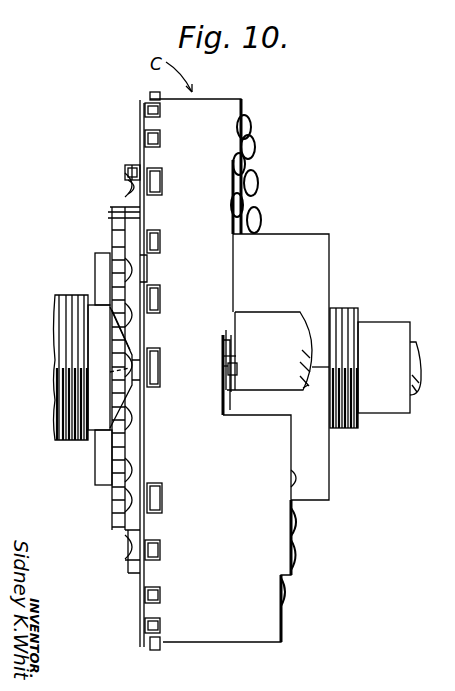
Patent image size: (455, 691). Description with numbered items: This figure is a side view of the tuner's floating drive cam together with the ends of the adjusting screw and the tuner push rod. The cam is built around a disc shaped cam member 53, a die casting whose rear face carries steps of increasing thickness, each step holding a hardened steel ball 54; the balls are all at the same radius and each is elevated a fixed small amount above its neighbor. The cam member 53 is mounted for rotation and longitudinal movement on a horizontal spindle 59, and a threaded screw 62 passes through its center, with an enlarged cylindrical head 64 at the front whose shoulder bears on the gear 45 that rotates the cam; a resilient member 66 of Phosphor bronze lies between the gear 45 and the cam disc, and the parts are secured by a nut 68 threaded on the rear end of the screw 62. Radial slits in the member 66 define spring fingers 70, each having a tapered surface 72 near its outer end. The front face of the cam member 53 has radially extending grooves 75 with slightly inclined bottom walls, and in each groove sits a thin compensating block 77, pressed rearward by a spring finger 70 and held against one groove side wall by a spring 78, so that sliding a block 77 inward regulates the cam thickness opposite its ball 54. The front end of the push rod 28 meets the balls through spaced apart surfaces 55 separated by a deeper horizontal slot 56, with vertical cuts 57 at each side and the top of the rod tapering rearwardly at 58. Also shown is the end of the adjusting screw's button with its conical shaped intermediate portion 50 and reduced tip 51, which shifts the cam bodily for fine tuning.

The push rod 28 is at (290, 321).
The gear 45 is at (112, 229).
The conical shaped intermediate portion 50 is at (118, 401).
The tip 51 is at (140, 372).
The cam member 53 is at (233, 90).
The hardened steel ball 54 is at (254, 158).
The spaced apart surfaces 55 is at (238, 384).
The horizontal slot 56 is at (226, 366).
The vertical cuts 57 is at (238, 360).
The tapered top 58 is at (236, 334).
The horizontal spindle 59 is at (404, 365).
The threaded screw 62 is at (346, 312).
The enlarged cylindrical head 64 is at (97, 467).
The resilient member 66 is at (118, 199).
The nut 68 is at (318, 250).
The spring fingers 70 is at (136, 170).
The tapered surface 72 is at (126, 187).
The radially extending grooves 75 is at (150, 289).
The compensating block 77 is at (147, 245).
The spring 78 is at (166, 232).